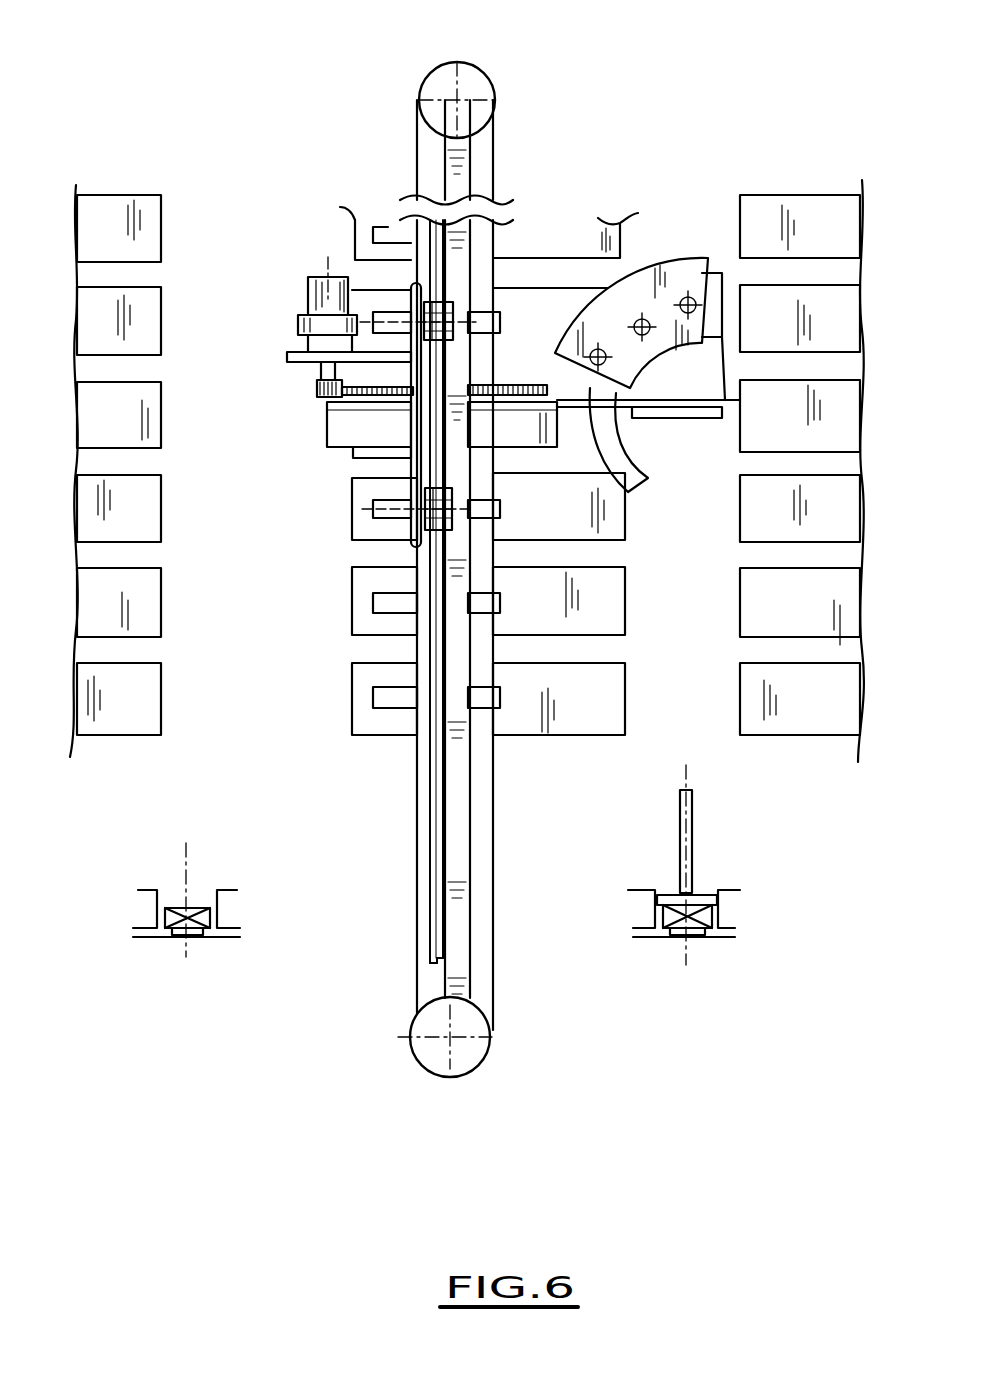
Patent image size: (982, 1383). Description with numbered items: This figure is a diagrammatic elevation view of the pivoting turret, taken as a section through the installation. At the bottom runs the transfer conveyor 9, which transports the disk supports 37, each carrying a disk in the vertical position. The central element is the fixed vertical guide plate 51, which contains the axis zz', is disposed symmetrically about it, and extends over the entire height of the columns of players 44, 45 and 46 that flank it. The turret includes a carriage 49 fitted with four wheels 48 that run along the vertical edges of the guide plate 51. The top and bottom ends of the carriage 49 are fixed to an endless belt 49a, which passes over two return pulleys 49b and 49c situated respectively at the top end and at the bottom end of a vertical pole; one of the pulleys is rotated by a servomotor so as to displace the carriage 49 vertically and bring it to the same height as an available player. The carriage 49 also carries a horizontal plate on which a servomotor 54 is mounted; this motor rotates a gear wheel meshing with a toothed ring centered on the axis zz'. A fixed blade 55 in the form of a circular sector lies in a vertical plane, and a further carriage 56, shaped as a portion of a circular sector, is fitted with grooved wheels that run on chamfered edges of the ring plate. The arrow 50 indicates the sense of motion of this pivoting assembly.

The transfer conveyor 9 is at (181, 937).
The disk support 37 is at (708, 850).
The column of players 44 is at (113, 752).
The column of players 45 is at (831, 750).
The column of players 46 is at (366, 750).
The wheel 48 is at (448, 297).
The carriage 49 is at (411, 462).
The endless belt 49a is at (491, 928).
The return pulley 49b is at (473, 82).
The return pulley 49c is at (470, 1050).
The direction of movement 50 is at (578, 384).
The guide plate 51 is at (444, 830).
The servomotor 54 is at (320, 277).
The fixed blade 55 is at (649, 488).
The carriage 56 is at (679, 275).